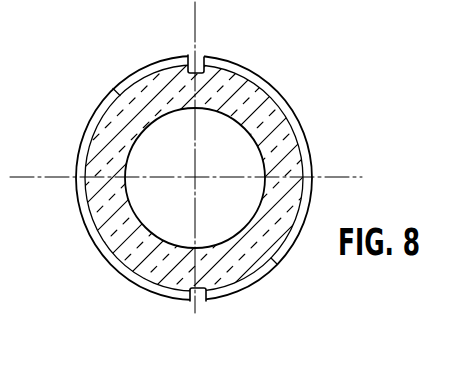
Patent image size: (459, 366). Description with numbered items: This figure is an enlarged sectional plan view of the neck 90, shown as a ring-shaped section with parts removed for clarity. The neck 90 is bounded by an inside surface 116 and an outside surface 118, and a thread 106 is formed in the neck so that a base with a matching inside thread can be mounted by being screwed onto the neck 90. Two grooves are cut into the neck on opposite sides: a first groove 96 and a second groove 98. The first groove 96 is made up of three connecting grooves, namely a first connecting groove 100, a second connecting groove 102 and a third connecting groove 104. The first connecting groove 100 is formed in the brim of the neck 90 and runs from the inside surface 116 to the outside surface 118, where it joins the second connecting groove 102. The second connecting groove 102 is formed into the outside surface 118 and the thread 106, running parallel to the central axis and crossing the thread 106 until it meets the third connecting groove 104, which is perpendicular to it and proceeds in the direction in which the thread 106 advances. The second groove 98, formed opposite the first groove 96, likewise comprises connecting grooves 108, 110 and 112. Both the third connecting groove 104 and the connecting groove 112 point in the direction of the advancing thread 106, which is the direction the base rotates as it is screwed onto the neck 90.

The neck 90 is at (91, 81).
The first groove 96 is at (200, 308).
The second groove 98 is at (193, 37).
The first connecting groove 100 is at (203, 246).
The second connecting groove 102 is at (196, 290).
The third connecting groove 104 is at (264, 267).
The thread 106 is at (287, 103).
The connecting groove 108 is at (193, 112).
The connecting groove 110 is at (197, 71).
The connecting groove 112 is at (149, 63).
The inside surface 116 is at (132, 206).
The outside surface 118 is at (120, 263).